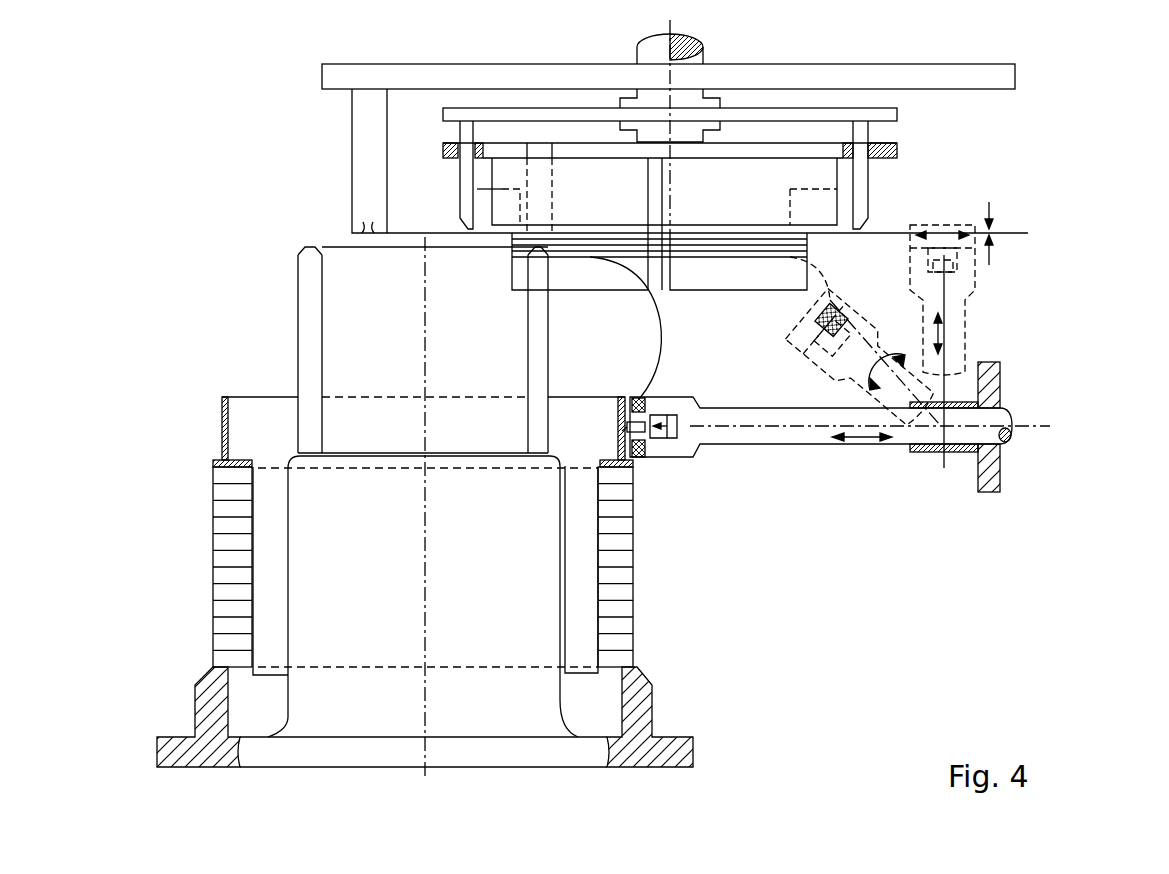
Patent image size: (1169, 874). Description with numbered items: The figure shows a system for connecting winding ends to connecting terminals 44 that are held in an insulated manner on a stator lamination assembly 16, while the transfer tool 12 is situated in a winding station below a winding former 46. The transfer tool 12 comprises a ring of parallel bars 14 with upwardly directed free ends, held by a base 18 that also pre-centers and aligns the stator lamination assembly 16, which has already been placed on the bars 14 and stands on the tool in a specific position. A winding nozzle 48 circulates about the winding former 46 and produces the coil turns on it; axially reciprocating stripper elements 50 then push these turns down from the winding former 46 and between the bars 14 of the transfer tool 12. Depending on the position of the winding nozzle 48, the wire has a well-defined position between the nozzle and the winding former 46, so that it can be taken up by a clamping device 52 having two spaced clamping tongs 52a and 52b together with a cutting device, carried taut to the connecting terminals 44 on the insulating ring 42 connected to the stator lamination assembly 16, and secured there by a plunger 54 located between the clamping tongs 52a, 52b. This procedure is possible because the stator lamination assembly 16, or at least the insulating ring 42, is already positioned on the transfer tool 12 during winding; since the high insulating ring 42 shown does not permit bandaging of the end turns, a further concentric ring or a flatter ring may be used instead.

The transfer tool 12 is at (297, 307).
The bars 14 is at (308, 355).
The stator lamination assembly 16 is at (232, 557).
The base 18 is at (327, 493).
The insulating ring 42 is at (220, 408).
The connecting terminals 44 is at (650, 447).
The winding former 46 is at (815, 181).
The winding nozzle 48 is at (363, 160).
The stripper elements 50 is at (465, 203).
The clamping device 52 is at (962, 280).
The clamping tong 52a is at (645, 405).
The clamping tong 52b is at (645, 450).
The plunger 54 is at (693, 450).